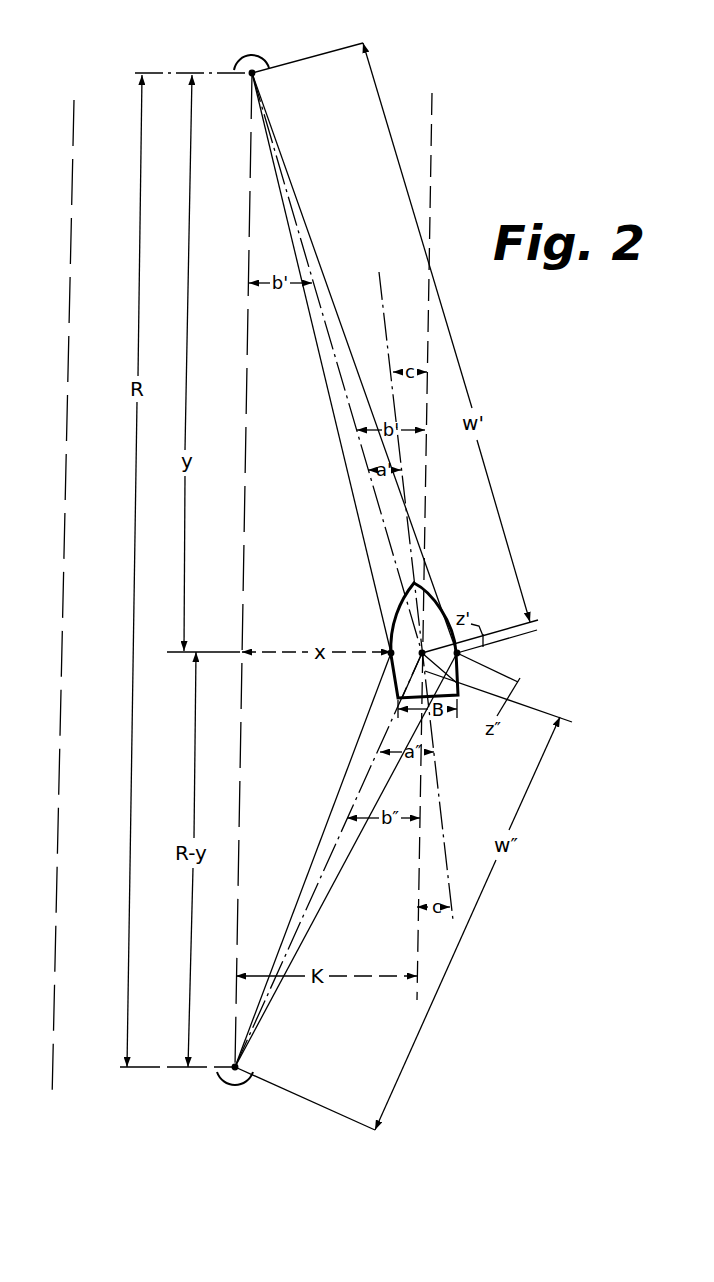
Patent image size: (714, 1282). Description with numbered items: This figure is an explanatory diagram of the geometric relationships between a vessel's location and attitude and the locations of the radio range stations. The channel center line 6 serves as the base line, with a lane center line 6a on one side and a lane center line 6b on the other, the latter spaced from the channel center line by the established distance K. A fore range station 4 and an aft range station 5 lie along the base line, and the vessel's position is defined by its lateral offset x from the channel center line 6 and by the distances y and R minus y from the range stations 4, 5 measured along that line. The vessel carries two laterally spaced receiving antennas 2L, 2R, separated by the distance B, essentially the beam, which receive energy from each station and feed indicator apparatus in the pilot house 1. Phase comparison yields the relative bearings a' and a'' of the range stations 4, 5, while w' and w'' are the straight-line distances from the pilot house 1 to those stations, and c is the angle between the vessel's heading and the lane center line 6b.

The pilot house 1 is at (446, 615).
The left receiving antenna 2L is at (390, 658).
The right receiving antenna 2R is at (462, 653).
The fore range station 4 is at (248, 56).
The aft range station 5 is at (220, 1083).
The channel center line 6 is at (249, 341).
The lane center line 6a is at (68, 354).
The lane center line 6b is at (432, 207).